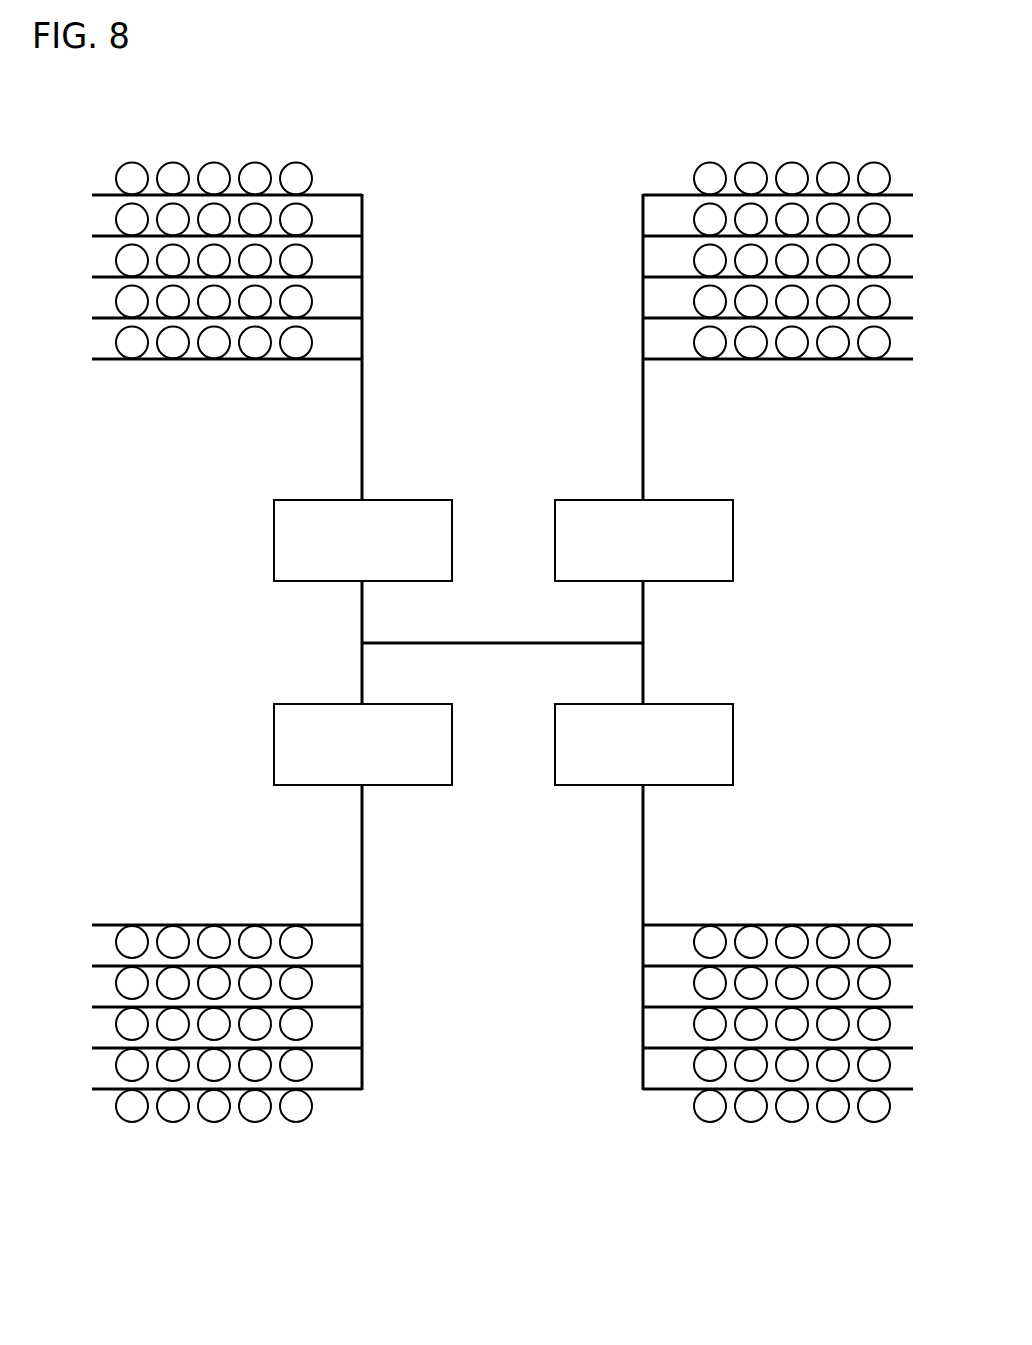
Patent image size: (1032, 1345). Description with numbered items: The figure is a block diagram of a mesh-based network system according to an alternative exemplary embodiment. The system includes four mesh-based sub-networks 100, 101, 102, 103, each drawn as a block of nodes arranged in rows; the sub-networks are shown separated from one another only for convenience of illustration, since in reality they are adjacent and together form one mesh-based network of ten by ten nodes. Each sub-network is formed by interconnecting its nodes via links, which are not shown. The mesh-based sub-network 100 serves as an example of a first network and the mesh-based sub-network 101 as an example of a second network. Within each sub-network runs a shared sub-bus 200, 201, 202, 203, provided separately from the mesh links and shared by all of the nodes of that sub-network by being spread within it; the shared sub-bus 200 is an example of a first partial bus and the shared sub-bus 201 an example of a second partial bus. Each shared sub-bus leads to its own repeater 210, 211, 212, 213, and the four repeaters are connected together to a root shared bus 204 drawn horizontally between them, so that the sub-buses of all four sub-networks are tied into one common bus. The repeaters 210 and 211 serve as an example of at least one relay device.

The mesh-based sub-network 100 is at (213, 143).
The mesh-based sub-network 101 is at (797, 143).
The mesh-based sub-network 102 is at (214, 1138).
The mesh-based sub-network 103 is at (792, 1137).
The shared sub-bus 200 is at (365, 429).
The shared sub-bus 201 is at (640, 430).
The shared sub-bus 202 is at (365, 850).
The shared sub-bus 203 is at (640, 850).
The root shared bus 204 is at (497, 640).
The repeater 210 is at (273, 538).
The repeater 211 is at (735, 538).
The repeater 212 is at (273, 741).
The repeater 213 is at (735, 741).